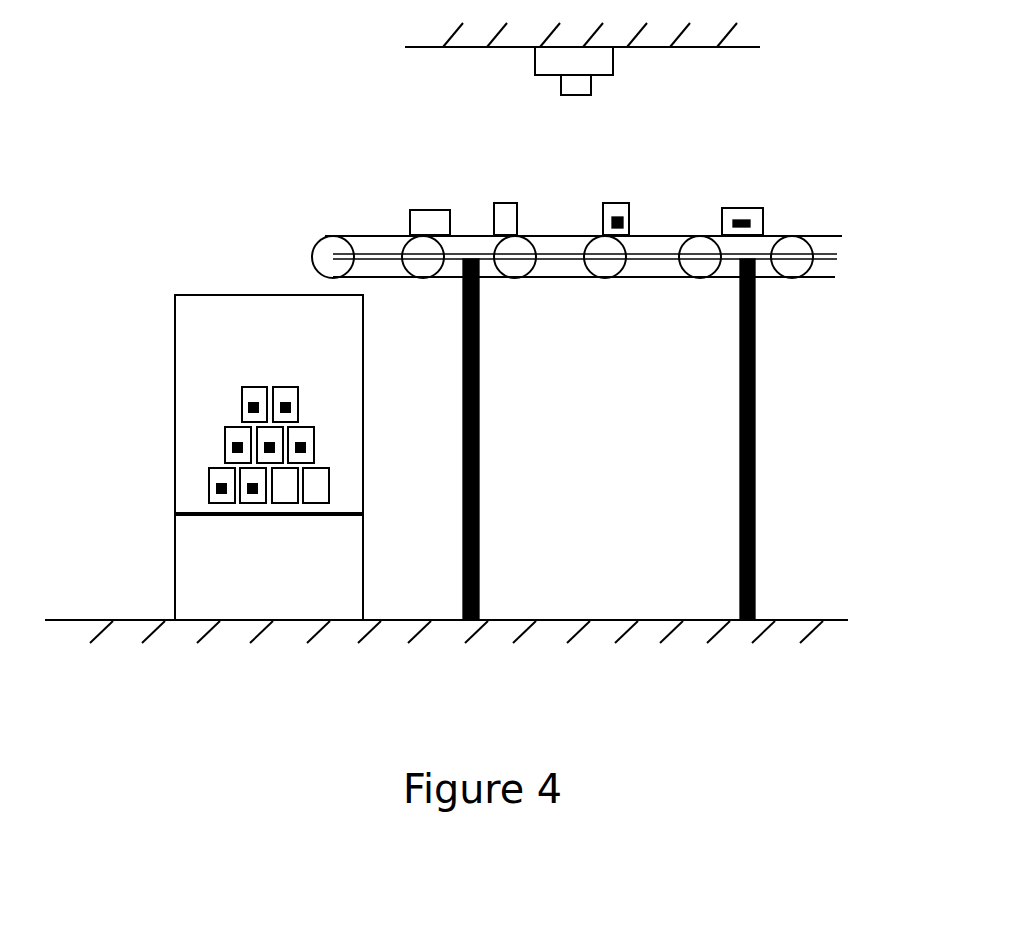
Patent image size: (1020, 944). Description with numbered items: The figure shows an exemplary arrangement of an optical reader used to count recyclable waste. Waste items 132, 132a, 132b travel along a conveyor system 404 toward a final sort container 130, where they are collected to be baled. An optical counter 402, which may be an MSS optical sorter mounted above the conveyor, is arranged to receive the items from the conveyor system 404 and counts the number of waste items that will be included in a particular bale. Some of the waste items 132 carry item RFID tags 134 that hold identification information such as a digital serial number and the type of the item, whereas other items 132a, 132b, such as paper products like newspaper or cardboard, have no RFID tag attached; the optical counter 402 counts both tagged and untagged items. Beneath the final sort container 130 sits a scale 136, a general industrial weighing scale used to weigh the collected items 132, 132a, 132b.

The optical counter 402 is at (622, 81).
The conveyor system 404 is at (296, 240).
The waste items 132 is at (242, 390).
The waste item 132a is at (432, 209).
The waste item 132b is at (495, 203).
The item RFID tags 134 is at (740, 228).
The final sort container 130 is at (269, 404).
The scale 136 is at (269, 567).